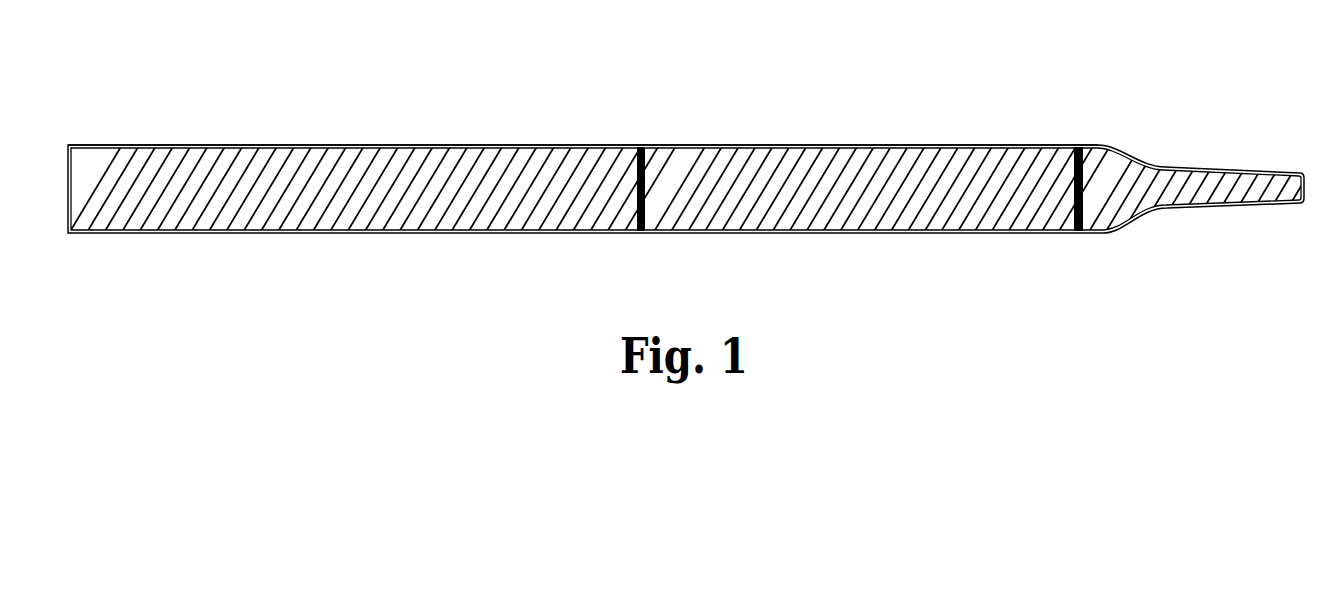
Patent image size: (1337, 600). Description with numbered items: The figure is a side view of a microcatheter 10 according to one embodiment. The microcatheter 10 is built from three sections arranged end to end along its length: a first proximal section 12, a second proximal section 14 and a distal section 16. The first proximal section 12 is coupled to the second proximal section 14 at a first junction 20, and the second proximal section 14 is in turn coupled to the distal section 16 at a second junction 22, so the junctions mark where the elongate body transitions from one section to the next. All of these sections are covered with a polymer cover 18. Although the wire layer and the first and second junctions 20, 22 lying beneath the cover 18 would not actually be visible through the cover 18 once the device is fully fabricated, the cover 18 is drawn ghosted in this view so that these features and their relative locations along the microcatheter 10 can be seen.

The microcatheter 10 is at (307, 75).
The first proximal section 12 is at (330, 233).
The second proximal section 14 is at (855, 233).
The distal section 16 is at (1228, 207).
The polymer cover 18 is at (145, 145).
The first junction 20 is at (641, 146).
The second junction 22 is at (1078, 146).